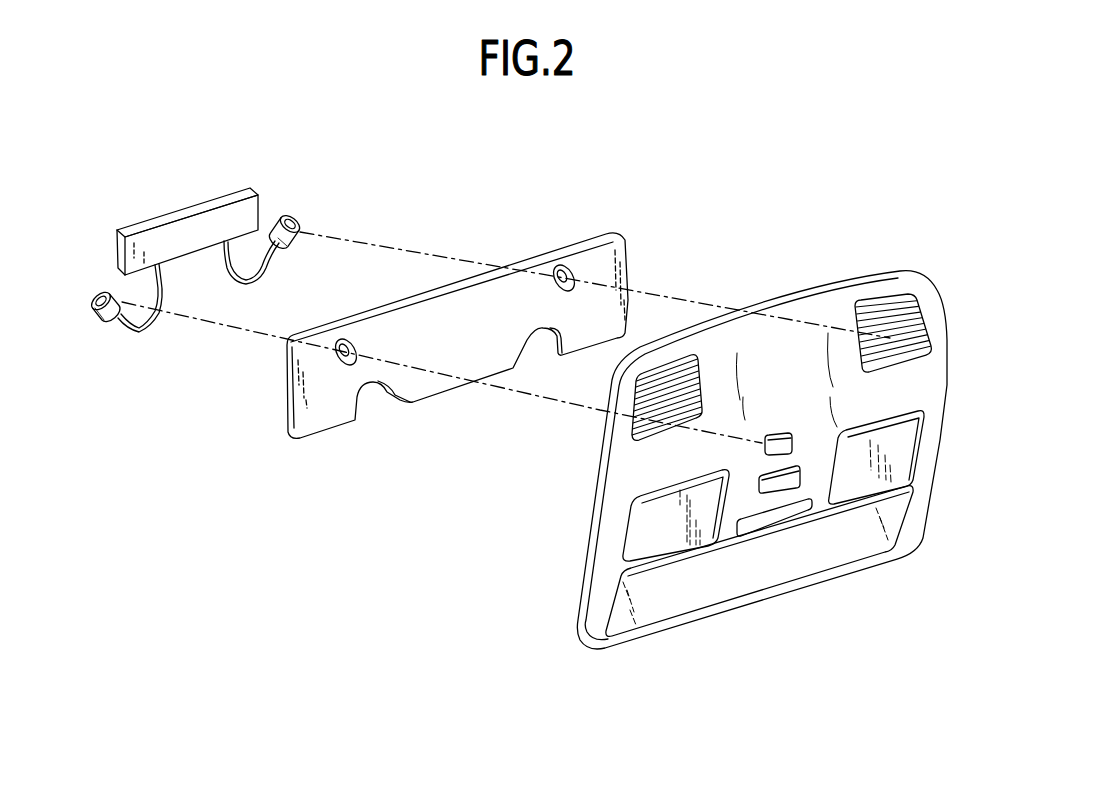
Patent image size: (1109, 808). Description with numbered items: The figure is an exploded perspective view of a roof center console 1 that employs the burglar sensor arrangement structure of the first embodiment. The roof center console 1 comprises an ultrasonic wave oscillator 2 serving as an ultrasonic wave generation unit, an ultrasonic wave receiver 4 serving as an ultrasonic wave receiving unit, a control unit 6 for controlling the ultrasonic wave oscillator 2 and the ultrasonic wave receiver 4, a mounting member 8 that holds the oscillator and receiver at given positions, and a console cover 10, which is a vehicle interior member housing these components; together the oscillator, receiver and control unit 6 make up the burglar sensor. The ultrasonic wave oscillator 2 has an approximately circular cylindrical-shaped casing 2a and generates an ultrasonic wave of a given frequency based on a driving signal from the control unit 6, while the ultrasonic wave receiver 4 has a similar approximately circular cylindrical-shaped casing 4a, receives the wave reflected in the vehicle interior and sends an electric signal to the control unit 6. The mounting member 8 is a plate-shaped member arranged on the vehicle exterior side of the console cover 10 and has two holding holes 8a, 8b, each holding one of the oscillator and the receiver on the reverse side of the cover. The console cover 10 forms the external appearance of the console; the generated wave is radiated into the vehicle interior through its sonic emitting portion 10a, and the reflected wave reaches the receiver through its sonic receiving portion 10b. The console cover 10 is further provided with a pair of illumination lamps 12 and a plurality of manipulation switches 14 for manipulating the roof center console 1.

The roof center console 1 is at (136, 567).
The ultrasonic wave oscillator 2 is at (85, 283).
The casing 2a is at (108, 316).
The ultrasonic wave receiver 4 is at (311, 209).
The casing 4a is at (287, 250).
The control unit 6 is at (203, 221).
The mounting member 8 is at (510, 282).
The holding hole 8a is at (352, 348).
The holding hole 8b is at (572, 273).
The console cover 10 is at (807, 304).
The sonic emitting portion 10a is at (633, 428).
The sonic receiving portion 10b is at (879, 307).
The illumination lamp 12 is at (642, 535).
The manipulation switch 14 is at (792, 445).